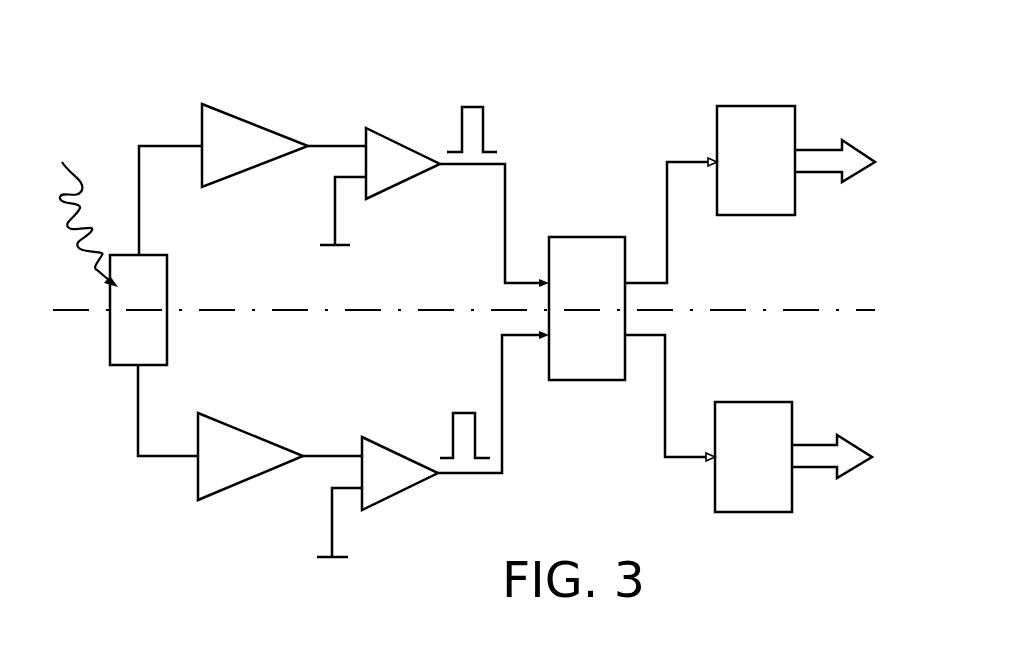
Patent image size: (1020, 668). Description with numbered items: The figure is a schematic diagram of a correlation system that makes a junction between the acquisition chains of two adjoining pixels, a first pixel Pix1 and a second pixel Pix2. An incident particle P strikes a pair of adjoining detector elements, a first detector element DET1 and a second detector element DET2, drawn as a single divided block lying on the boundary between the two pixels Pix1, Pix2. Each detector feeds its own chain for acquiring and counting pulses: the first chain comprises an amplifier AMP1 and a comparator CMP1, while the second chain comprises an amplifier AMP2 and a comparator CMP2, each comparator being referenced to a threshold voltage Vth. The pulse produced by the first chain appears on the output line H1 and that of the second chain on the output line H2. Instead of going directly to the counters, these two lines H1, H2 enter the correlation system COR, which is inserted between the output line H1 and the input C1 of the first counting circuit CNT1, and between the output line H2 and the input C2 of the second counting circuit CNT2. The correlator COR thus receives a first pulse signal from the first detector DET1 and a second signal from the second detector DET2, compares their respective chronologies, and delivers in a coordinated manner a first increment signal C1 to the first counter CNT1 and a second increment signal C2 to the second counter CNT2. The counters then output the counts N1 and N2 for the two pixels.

The incident photon P is at (82, 213).
The first detector element DET1 is at (157, 283).
The second detector element DET2 is at (155, 339).
The first acquisition chain amplifier AMP1 is at (227, 123).
The second acquisition chain amplifier AMP2 is at (208, 483).
The first acquisition chain comparator CMP1 is at (387, 147).
The second acquisition chain comparator CMP2 is at (388, 455).
The threshold voltage Vth is at (339, 384).
The output line of the first acquisition chain H1 is at (494, 197).
The output line of the second acquisition chain H2 is at (493, 406).
The correlation system COR is at (605, 253).
The first increment signal C1 is at (671, 207).
The second increment signal C2 is at (670, 411).
The first counting circuit CNT1 is at (770, 120).
The second counting circuit CNT2 is at (775, 500).
The first count output N1 is at (846, 156).
The second count output N2 is at (842, 453).
The first pixel Pix1 is at (464, 291).
The second pixel Pix2 is at (831, 335).